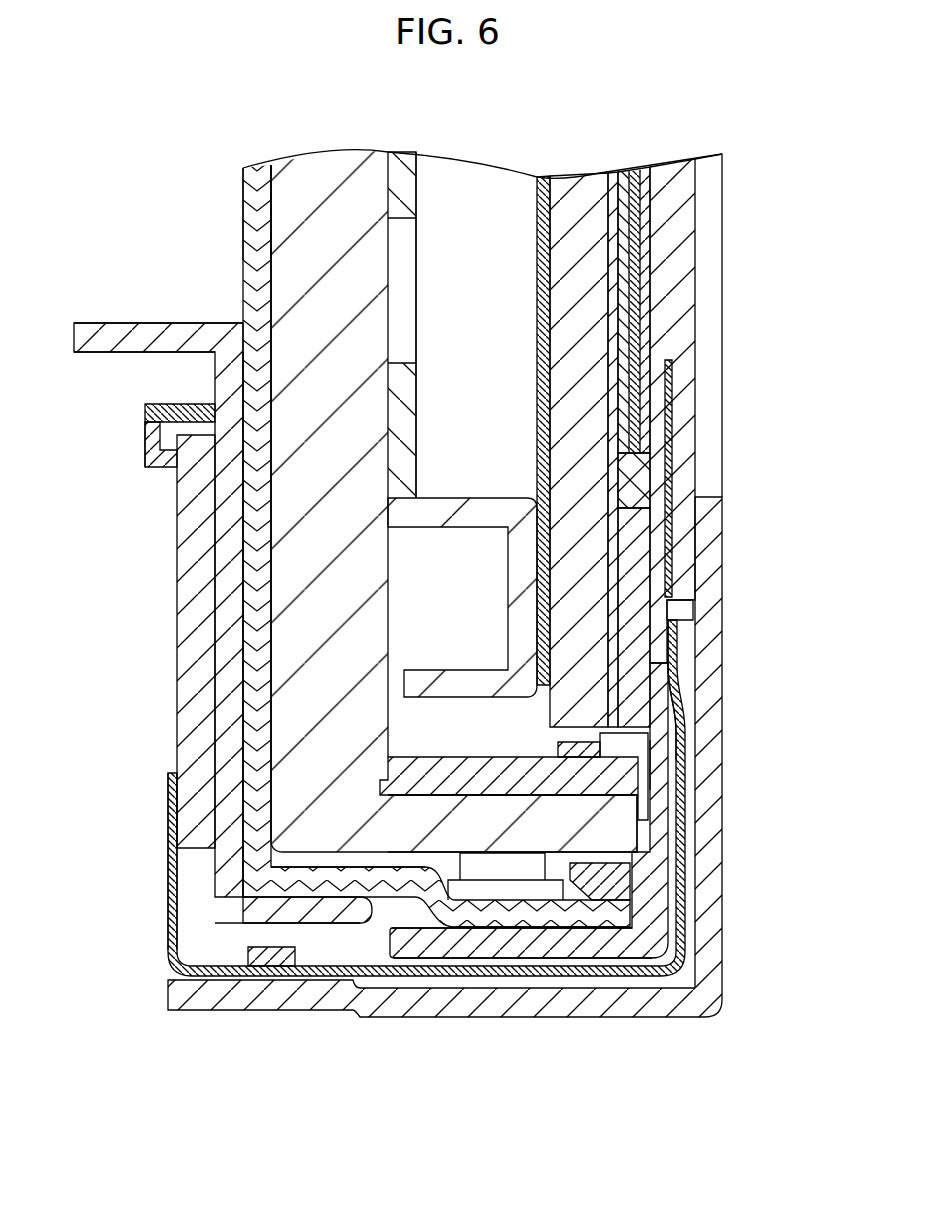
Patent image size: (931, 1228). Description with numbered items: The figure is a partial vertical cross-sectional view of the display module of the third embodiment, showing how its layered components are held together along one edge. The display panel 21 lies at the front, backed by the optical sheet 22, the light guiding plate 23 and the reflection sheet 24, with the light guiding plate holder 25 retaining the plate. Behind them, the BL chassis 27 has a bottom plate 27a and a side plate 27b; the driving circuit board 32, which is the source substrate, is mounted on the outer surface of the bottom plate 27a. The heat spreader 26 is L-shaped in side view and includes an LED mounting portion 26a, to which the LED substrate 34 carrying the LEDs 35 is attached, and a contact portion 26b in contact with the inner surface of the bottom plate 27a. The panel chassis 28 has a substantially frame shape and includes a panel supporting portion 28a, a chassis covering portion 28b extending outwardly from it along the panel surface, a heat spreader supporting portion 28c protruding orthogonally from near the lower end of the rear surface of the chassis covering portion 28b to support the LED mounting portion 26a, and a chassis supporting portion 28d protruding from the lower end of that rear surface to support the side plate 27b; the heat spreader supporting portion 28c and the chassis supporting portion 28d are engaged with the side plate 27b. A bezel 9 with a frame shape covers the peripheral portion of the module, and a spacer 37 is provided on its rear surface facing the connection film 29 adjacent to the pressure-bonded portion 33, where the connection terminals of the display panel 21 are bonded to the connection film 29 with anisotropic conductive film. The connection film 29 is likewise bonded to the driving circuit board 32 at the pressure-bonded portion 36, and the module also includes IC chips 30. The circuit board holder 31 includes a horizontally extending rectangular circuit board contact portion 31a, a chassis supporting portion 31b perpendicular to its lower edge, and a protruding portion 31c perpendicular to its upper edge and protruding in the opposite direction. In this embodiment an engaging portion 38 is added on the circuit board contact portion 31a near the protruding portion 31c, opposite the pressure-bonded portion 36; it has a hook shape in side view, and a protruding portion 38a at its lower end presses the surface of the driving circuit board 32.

The bezel 9 is at (705, 890).
The display panel 21 is at (685, 263).
The optical sheet 22 is at (653, 197).
The light guiding plate 23 is at (598, 313).
The reflection sheet 24 is at (545, 177).
The light guiding plate holder 25 is at (428, 502).
The heat spreader 26 is at (323, 168).
The LED mounting portion 26a is at (512, 838).
The contact portion 26b is at (285, 285).
The BL chassis 27 is at (258, 232).
The bottom plate 27a is at (253, 196).
The side plate 27b is at (437, 905).
The panel chassis 28 is at (650, 547).
The panel supporting portion 28a is at (645, 582).
The chassis covering portion 28b is at (655, 762).
The heat spreader supporting portion 28c is at (690, 935).
The chassis supporting portion 28d is at (600, 945).
The connection film 29 is at (688, 972).
The IC chip 30 is at (270, 965).
The circuit board holder 31 is at (232, 373).
The circuit board contact portion 31a is at (228, 597).
The chassis supporting portion 31b is at (248, 908).
The protruding portion 31c is at (100, 340).
The driving circuit board 32 is at (185, 680).
The pressure-bonded portion 33 is at (678, 632).
The LED substrate 34 is at (600, 872).
The LED 35 is at (590, 745).
The pressure-bonded portion 36 is at (172, 793).
The spacer 37 is at (622, 777).
The engaging portion 38 is at (128, 408).
The protruding portion 38a is at (150, 437).